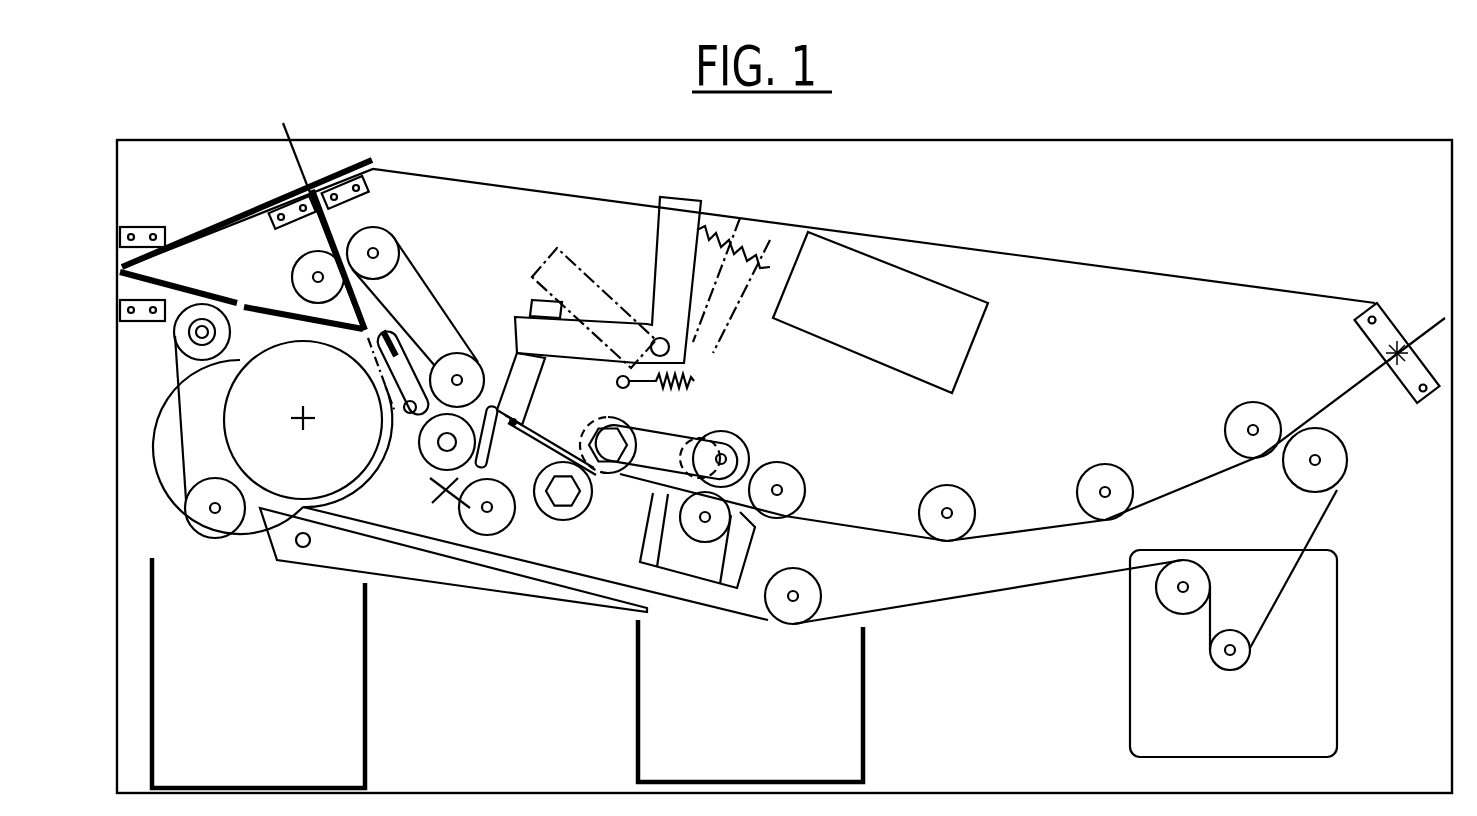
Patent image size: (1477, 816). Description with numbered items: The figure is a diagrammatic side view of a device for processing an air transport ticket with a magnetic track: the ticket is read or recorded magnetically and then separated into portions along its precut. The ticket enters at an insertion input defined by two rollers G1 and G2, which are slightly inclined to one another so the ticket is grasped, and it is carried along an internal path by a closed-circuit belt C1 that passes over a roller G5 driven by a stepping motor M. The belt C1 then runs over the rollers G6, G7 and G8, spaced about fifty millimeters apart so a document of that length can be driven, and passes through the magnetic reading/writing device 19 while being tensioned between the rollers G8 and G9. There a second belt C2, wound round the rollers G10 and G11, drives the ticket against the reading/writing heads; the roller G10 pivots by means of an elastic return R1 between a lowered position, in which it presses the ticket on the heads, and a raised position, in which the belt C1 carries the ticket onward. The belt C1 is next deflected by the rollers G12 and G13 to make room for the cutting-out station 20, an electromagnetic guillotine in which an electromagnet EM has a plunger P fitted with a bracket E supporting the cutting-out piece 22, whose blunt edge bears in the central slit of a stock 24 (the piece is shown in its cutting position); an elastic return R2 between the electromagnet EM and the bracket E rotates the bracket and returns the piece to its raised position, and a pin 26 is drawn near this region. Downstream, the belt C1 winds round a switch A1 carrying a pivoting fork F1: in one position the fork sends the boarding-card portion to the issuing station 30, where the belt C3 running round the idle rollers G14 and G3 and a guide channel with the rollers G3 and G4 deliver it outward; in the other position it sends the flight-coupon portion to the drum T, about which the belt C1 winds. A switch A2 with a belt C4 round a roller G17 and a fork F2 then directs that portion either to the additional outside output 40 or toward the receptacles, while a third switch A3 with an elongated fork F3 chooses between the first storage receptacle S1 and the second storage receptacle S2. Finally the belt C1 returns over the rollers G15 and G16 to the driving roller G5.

The issuing station 30 is at (311, 175).
The additional output 40 is at (165, 270).
The roller G3 is at (387, 238).
The roller G4 is at (298, 274).
The belt C3 is at (438, 284).
The fork F2 is at (235, 325).
The switch A1 is at (396, 338).
The fork F1 is at (399, 346).
The roller G14 is at (463, 353).
The pin 26 is at (488, 400).
The switch A2 is at (178, 338).
The belt C4 is at (180, 419).
The drum T is at (310, 475).
The roller G13 is at (428, 459).
The cutting-out piece 22 is at (439, 502).
The roller G17 is at (206, 531).
The third switch A3 is at (335, 555).
The roller G12 is at (489, 536).
The elongated fork F3 is at (550, 591).
The stock 24 is at (541, 504).
The roller G9 is at (592, 499).
The plunger P is at (532, 375).
The cutting-out station 20 is at (531, 426).
The bracket E is at (675, 222).
The elastic return R2 is at (773, 259).
The elastic return R1 is at (695, 381).
The roller G11 is at (639, 436).
The belt C2 is at (765, 456).
The roller G10 is at (731, 436).
The roller G8 is at (806, 489).
The magnetic reading/writing device 19 is at (760, 542).
The roller G15 is at (823, 595).
The electromagnet EM is at (938, 307).
The roller G7 is at (945, 496).
The roller G6 is at (1098, 478).
The roller G1 is at (1243, 418).
The roller G2 is at (1348, 461).
The belt C1 is at (1320, 531).
The roller G16 is at (1211, 589).
The roller G5 is at (1228, 672).
The motor M is at (1314, 658).
The first storage receptacle S1 is at (272, 716).
The second storage receptacle S2 is at (774, 726).